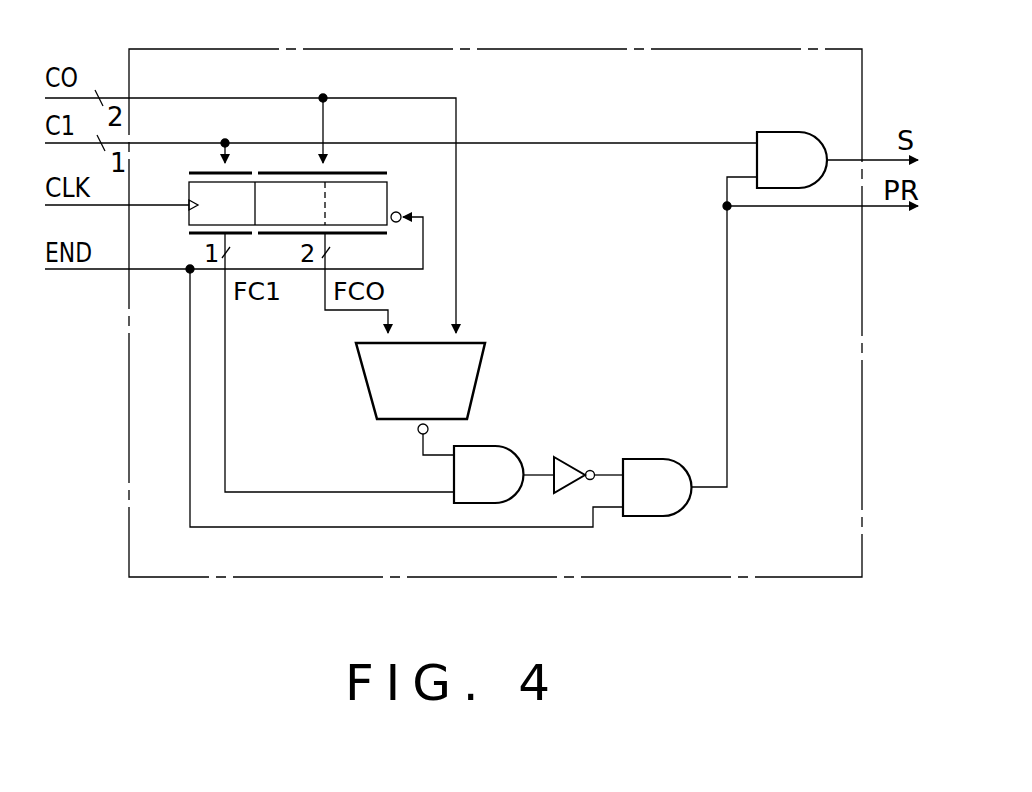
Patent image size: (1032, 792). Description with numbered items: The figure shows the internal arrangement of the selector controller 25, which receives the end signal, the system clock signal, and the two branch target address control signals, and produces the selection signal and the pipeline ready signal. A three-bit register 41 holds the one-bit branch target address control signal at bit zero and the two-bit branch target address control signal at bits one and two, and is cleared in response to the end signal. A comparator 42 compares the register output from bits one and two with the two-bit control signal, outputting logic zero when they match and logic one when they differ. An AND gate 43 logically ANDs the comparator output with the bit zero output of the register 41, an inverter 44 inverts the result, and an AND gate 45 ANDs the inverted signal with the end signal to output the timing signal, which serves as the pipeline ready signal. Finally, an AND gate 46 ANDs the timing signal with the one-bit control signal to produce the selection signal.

The selector controller 25 is at (755, 49).
The 3-bit register 41 is at (388, 196).
The comparator 42 is at (482, 350).
The AND gate 43 is at (485, 420).
The inverter 44 is at (567, 457).
The AND gate 45 is at (659, 459).
The AND gate 46 is at (785, 132).